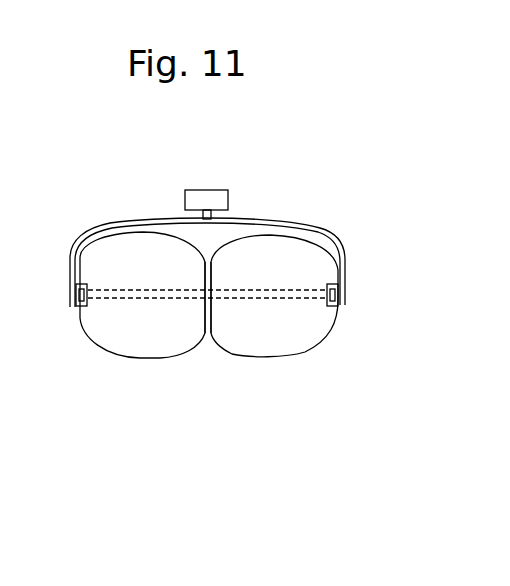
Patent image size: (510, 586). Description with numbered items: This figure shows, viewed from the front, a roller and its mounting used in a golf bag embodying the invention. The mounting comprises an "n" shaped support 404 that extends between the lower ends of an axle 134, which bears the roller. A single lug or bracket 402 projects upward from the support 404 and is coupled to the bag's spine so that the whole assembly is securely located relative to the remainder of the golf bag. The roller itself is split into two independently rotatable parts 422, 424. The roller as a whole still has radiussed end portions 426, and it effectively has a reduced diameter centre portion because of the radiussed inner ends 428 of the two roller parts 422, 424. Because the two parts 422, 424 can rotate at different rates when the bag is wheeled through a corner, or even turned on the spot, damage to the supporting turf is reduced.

The lug or bracket 402 is at (187, 186).
The "n" shaped support 404 is at (87, 234).
The axle 134 is at (98, 298).
The roller part 422 is at (135, 359).
The roller part 424 is at (307, 355).
The radiussed end portions 426 is at (333, 340).
The radiussed inner ends 428 is at (215, 349).